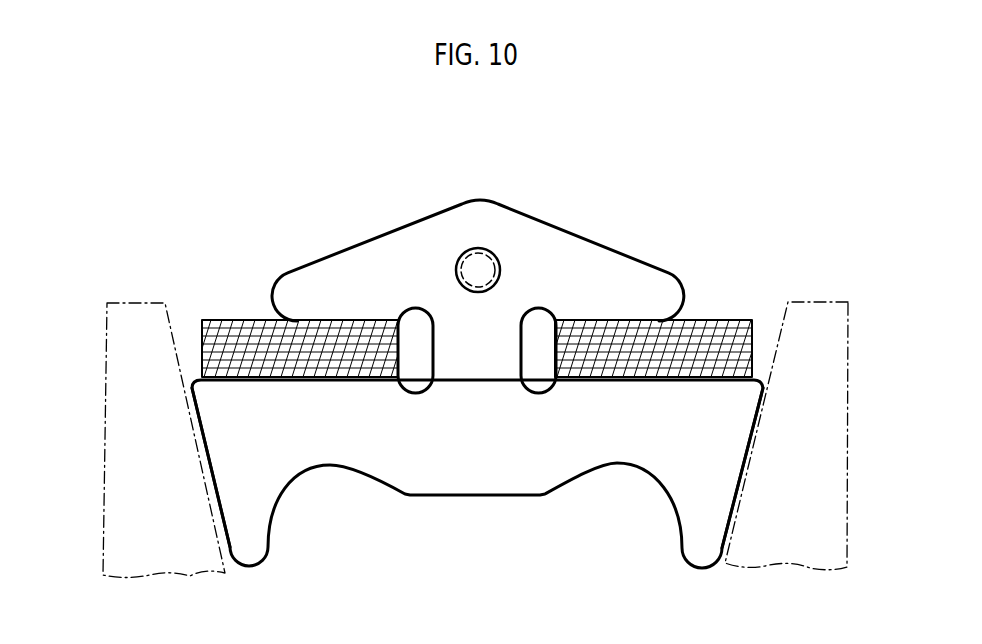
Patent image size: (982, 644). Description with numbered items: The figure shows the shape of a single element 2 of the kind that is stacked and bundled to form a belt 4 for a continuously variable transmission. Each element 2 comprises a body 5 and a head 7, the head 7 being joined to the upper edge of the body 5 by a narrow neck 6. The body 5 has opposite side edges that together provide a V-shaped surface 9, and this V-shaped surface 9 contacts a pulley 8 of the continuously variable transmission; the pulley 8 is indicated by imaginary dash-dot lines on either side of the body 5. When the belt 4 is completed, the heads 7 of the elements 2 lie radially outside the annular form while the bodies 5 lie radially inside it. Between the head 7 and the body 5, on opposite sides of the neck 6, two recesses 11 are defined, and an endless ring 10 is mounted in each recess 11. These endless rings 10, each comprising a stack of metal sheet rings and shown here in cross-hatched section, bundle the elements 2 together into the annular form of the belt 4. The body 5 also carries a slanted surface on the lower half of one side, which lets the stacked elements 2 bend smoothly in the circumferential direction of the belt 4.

The element 2 is at (590, 235).
The belt 4 is at (520, 220).
The body 5 is at (362, 420).
The neck 6 is at (480, 335).
The head 7 is at (497, 236).
The pulley 8 is at (485, 440).
The V-shaped surface 9 is at (200, 460).
The endless ring 10 is at (495, 288).
The recess 11 is at (335, 343).